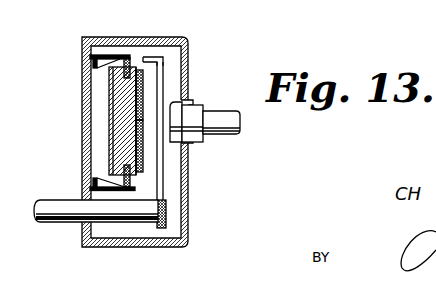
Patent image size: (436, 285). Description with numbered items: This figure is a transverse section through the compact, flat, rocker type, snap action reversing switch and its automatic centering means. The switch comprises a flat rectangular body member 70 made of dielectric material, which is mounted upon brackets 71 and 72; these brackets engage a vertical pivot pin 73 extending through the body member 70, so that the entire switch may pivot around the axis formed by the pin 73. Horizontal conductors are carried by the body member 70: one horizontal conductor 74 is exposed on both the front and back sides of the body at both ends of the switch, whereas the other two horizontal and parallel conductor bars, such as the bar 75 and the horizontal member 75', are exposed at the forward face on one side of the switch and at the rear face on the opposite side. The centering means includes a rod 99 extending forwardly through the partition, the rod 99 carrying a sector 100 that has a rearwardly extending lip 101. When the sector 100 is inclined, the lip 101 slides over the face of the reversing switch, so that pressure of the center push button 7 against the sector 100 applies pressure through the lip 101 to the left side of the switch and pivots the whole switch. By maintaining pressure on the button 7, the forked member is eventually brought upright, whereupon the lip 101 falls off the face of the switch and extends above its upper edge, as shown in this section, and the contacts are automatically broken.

The push button 7 is at (220, 108).
The body member 70 is at (109, 95).
The bracket 71 is at (102, 55).
The bracket 72 is at (105, 192).
The pivot pin 73 is at (122, 170).
The horizontal conductor 74 is at (142, 80).
The conductor bar 75 is at (180, 95).
The horizontal member 75' is at (182, 147).
The rod 99 is at (62, 207).
The sector 100 is at (163, 182).
The lip 101 is at (152, 55).